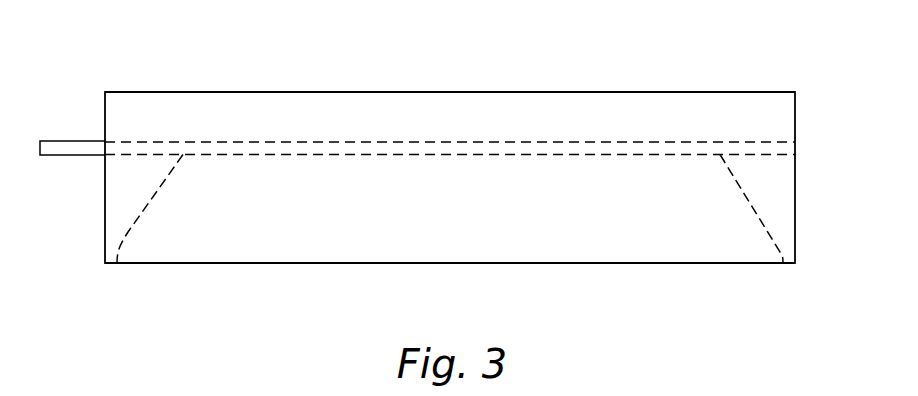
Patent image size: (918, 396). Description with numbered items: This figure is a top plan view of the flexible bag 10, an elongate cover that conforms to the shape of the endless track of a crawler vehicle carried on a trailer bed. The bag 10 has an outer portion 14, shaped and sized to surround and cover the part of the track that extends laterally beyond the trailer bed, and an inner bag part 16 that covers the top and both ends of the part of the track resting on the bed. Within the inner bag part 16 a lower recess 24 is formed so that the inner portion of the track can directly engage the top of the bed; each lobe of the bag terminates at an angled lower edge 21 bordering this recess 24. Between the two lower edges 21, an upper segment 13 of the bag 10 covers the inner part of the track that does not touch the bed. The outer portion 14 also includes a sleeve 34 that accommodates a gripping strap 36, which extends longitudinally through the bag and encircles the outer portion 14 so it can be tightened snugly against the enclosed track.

The flexible bag 10 is at (796, 115).
The upper segment 13 is at (521, 101).
The outer portion 14 is at (172, 91).
The inner bag part 16 is at (633, 264).
The angled lower edge 21 is at (132, 230).
The lower recess 24 is at (237, 154).
The sleeve 34 is at (300, 141).
The gripping strap 36 is at (62, 140).